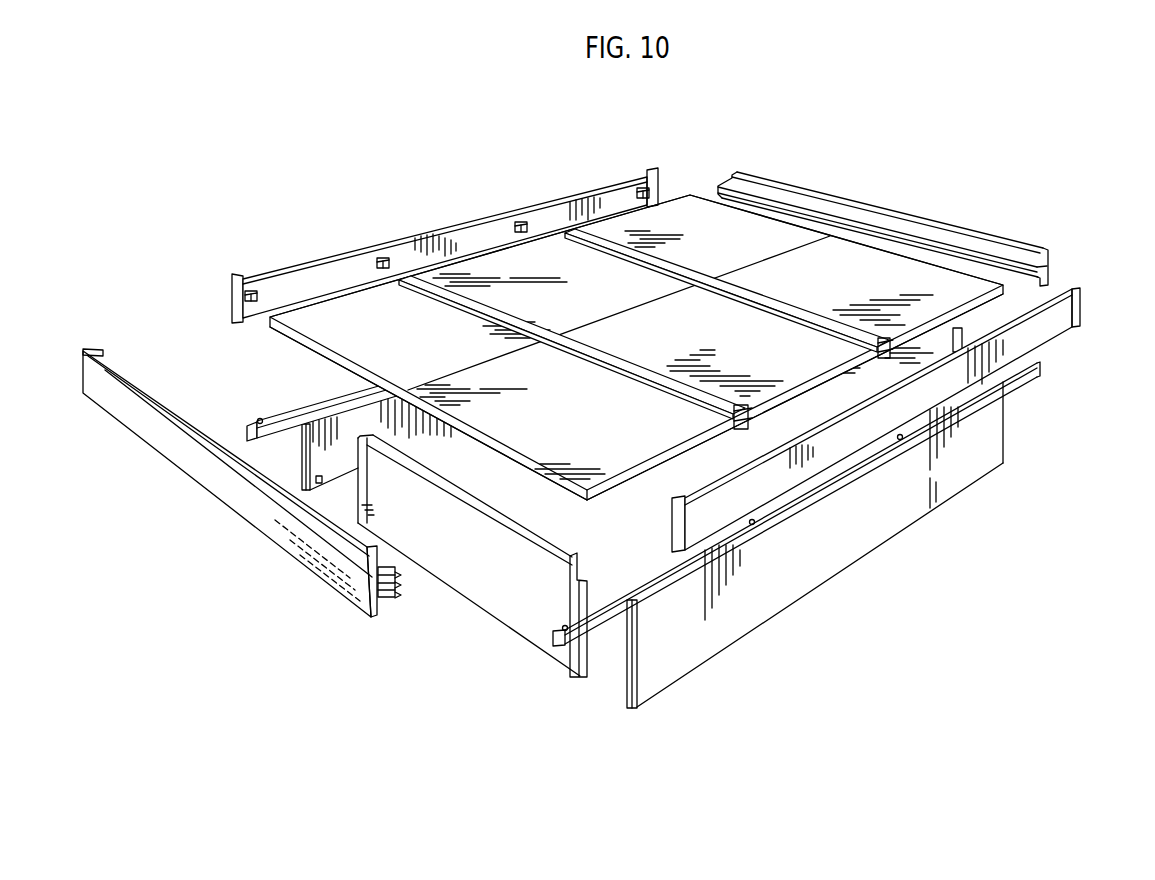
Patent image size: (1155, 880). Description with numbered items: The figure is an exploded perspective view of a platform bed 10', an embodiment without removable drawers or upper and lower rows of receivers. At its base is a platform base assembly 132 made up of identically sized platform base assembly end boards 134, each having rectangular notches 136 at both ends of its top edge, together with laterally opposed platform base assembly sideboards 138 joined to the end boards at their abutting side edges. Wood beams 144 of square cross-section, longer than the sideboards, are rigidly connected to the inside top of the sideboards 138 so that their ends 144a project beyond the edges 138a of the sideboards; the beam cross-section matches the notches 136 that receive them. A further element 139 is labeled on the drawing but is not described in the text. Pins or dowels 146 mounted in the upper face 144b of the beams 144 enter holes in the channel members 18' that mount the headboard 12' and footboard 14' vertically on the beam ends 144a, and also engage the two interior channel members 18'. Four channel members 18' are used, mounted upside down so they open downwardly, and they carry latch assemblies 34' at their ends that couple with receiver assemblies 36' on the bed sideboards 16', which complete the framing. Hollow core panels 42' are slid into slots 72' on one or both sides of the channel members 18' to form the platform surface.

The platform bed 10' is at (595, 447).
The headboard 12' is at (230, 483).
The footboard 14' is at (751, 378).
The bed sideboards 16' is at (656, 360).
The channel members 18' is at (633, 413).
The latch assemblies 34' is at (644, 484).
The receiver assemblies 36' is at (447, 244).
The hollow core panels 42' is at (636, 347).
The slots 72' is at (721, 391).
The platform base assembly 132 is at (568, 684).
The platform base assembly end boards 134 is at (518, 627).
The rectangular notches 136 is at (368, 448).
The platform base assembly sideboards 138 is at (427, 433).
The edges of base assembly sideboards 138a is at (628, 688).
The locating pin 139 is at (322, 483).
The wood beams 144 is at (290, 407).
The ends of the beams 144a is at (612, 620).
The upper face of beams 144b is at (645, 592).
The pins or dowels 146 is at (258, 420).